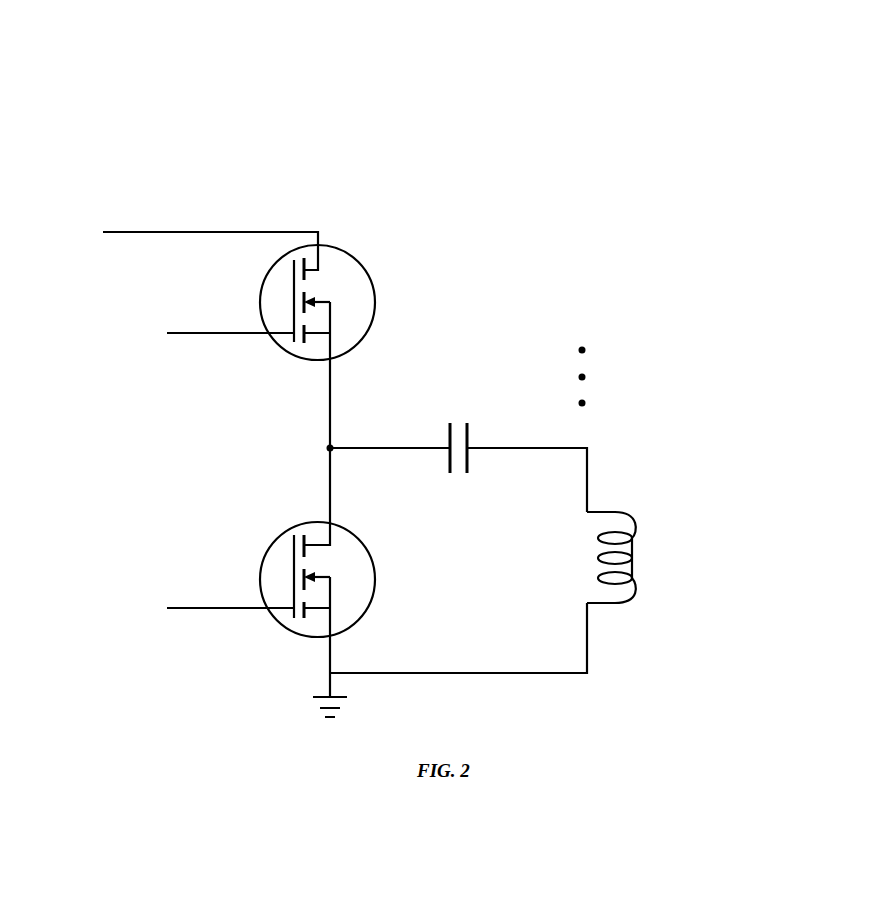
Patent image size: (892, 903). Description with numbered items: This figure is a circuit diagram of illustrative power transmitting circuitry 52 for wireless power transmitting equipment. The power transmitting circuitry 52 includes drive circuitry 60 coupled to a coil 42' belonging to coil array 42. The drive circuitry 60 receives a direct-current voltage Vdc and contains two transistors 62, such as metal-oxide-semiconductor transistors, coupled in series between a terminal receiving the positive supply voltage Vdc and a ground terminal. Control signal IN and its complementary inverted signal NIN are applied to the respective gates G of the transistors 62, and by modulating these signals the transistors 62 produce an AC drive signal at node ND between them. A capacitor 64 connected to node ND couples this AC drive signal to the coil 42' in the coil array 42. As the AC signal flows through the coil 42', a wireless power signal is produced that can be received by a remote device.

The power transmitting circuitry 52 is at (700, 71).
The drive circuitry 60 is at (418, 148).
The transistors 62 is at (380, 339).
The capacitor 64 is at (461, 487).
The coil array 42 is at (538, 467).
The coil 42' is at (620, 596).